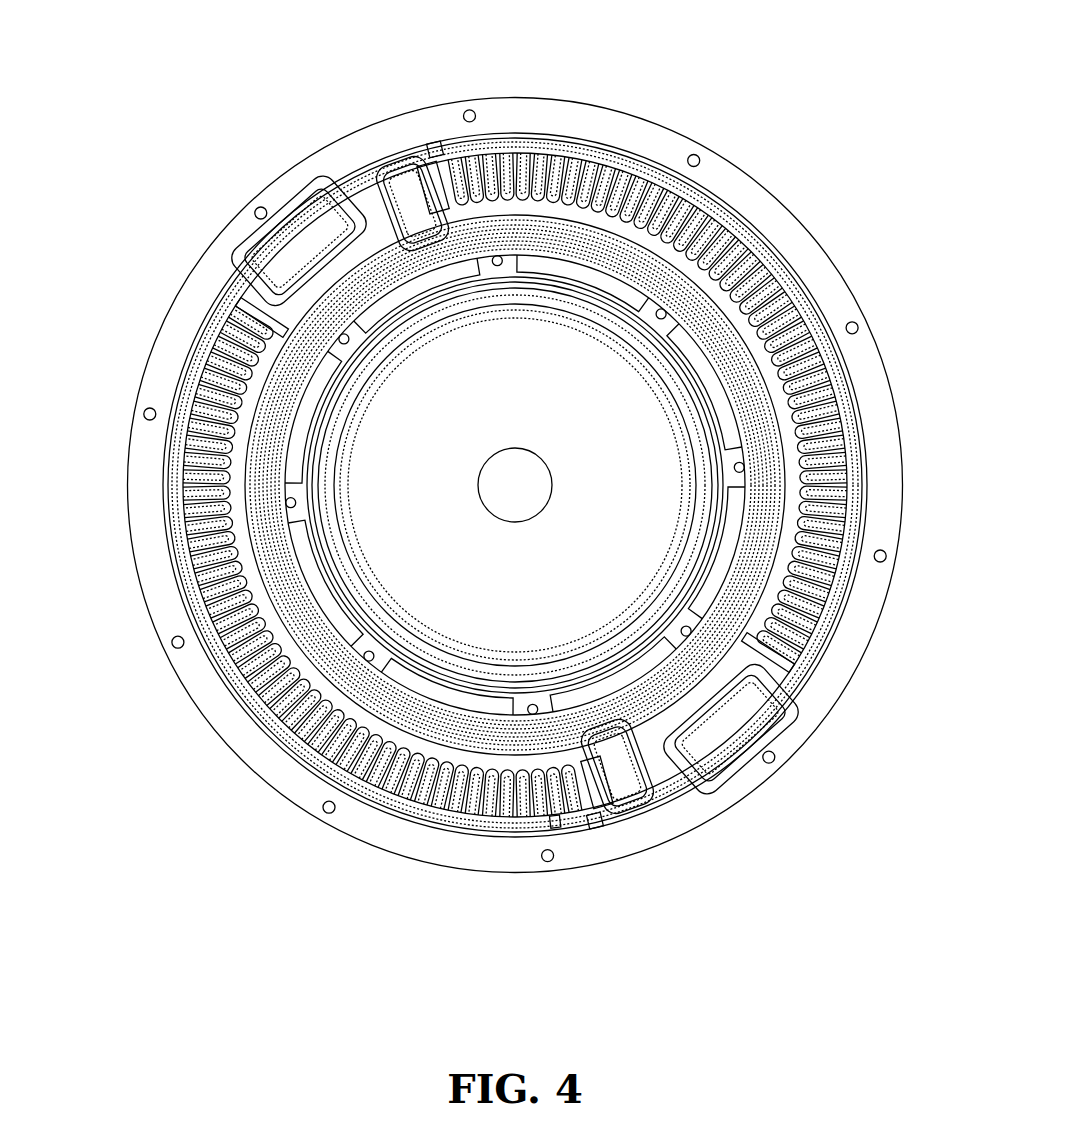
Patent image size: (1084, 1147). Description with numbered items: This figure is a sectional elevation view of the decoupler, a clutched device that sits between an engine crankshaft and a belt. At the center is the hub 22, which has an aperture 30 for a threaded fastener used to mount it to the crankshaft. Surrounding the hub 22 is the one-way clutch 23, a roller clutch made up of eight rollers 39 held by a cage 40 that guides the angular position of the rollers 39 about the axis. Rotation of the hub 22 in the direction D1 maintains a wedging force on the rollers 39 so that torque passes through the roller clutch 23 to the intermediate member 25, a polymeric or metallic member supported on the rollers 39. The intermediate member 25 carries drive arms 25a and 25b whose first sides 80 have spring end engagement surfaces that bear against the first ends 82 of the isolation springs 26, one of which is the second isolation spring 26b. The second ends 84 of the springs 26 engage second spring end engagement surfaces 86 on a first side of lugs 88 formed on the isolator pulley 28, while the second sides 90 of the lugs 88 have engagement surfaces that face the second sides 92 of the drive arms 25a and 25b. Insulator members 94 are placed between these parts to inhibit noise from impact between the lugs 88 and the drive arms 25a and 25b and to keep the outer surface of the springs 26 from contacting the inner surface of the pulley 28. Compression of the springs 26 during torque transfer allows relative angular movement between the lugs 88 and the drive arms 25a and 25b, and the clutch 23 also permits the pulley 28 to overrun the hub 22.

The hub 22 is at (502, 390).
The one-way clutch 23 is at (569, 397).
The intermediate member 25 is at (540, 220).
The drive arm 25a is at (397, 200).
The drive arm 25b is at (622, 790).
The isolation springs 26 is at (848, 386).
The second isolation spring 26b is at (168, 558).
The isolator pulley 28 is at (494, 100).
The aperture 30 is at (503, 499).
The roller 39 is at (662, 316).
The cage 40 is at (697, 345).
The first sides 80 is at (447, 185).
The first ends 82 is at (555, 822).
The second ends 84 is at (215, 330).
The second spring end engagement surfaces 86 is at (235, 297).
The lugs 88 is at (282, 252).
The second sides of the lugs 90 is at (393, 165).
The second sides of the drive arms 92 is at (345, 237).
The insulator members 94 is at (435, 150).
The direction of rotation D1 is at (699, 124).